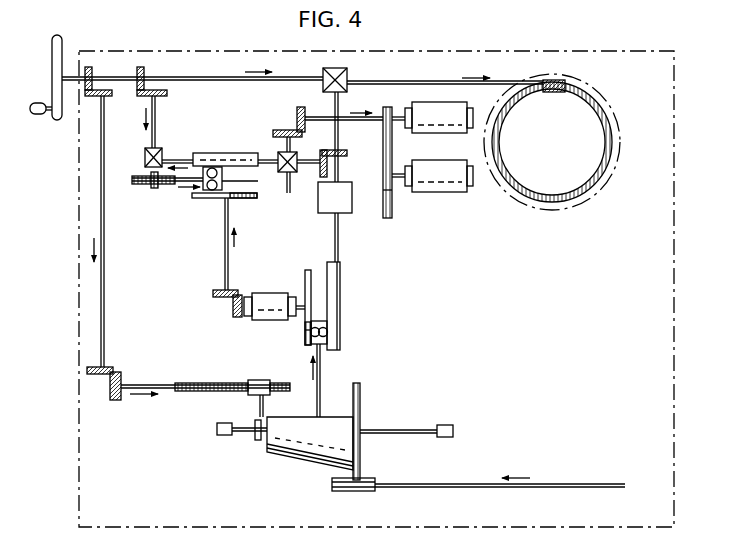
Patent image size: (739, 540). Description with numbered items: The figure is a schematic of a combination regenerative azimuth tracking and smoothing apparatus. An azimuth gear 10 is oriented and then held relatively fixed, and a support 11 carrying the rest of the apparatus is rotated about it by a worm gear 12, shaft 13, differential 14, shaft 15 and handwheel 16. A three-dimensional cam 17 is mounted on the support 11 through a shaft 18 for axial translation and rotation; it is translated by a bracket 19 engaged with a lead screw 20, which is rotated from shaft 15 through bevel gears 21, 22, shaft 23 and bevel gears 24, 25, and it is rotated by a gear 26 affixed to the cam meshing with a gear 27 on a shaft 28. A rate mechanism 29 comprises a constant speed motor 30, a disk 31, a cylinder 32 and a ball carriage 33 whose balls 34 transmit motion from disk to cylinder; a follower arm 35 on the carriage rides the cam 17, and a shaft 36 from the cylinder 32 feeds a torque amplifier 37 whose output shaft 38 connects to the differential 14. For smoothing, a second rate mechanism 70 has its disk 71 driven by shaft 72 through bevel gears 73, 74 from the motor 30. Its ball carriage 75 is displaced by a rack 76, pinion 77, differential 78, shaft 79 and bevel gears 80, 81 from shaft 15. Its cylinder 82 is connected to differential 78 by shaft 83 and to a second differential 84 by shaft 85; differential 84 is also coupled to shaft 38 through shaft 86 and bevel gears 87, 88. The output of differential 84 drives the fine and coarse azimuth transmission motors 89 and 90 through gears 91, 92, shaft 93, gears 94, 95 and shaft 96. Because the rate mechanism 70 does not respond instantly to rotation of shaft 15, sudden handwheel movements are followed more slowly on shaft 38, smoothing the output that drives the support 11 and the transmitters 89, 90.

The azimuth gear 10 is at (615, 150).
The support 11 is at (524, 51).
The worm gear 12 is at (562, 82).
The shaft 13 is at (430, 82).
The differential 14 is at (342, 70).
The shaft 15 is at (197, 78).
The handwheel 16 is at (64, 45).
The three-dimensional cam 17 is at (307, 460).
The shaft 18 is at (412, 430).
The bracket 19 is at (249, 394).
The lead screw 20 is at (208, 384).
The bevel gear 21 is at (122, 382).
The bevel gear 22 is at (113, 367).
The shaft 23 is at (106, 278).
The bevel gear 24 is at (112, 95).
The bevel gear 25 is at (93, 73).
The gear 26 is at (362, 400).
The gear 27 is at (352, 491).
The shaft 28 is at (449, 484).
The rate mechanism 29 is at (322, 323).
The constant speed motor 30 is at (286, 320).
The disk 31 is at (305, 276).
The cylinder 32 is at (341, 294).
The ball carriage 33 is at (327, 328).
The balls 34 is at (313, 344).
The follower arm 35 is at (322, 380).
The shaft 36 is at (339, 246).
The torque amplifier 37 is at (335, 197).
The output shaft 38 is at (339, 135).
The second rate mechanism 70 is at (225, 180).
The disk 71 is at (210, 198).
The shaft 72 is at (224, 233).
The bevel gear 73 is at (216, 297).
The bevel gear 74 is at (234, 316).
The ball carriage 75 is at (258, 187).
The rack 76 is at (134, 184).
The pinion 77 is at (154, 188).
The differential 78 is at (145, 158).
The shaft 79 is at (158, 126).
The bevel gear 80 is at (168, 94).
The bevel gear 81 is at (145, 73).
The cylinder 82 is at (218, 155).
The shaft 83 is at (180, 158).
The second differential 84 is at (289, 188).
The shaft 85 is at (266, 160).
The shaft 86 is at (305, 164).
The bevel gear 87 is at (327, 170).
The bevel gear 88 is at (347, 153).
The fine azimuth transmission motor 89 is at (428, 190).
The coarse azimuth transmission motor 90 is at (461, 128).
The gear 91 is at (383, 192).
The gear 92 is at (384, 108).
The shaft 93 is at (319, 117).
The gear 94 is at (297, 114).
The gear 95 is at (275, 131).
The shaft 96 is at (291, 144).